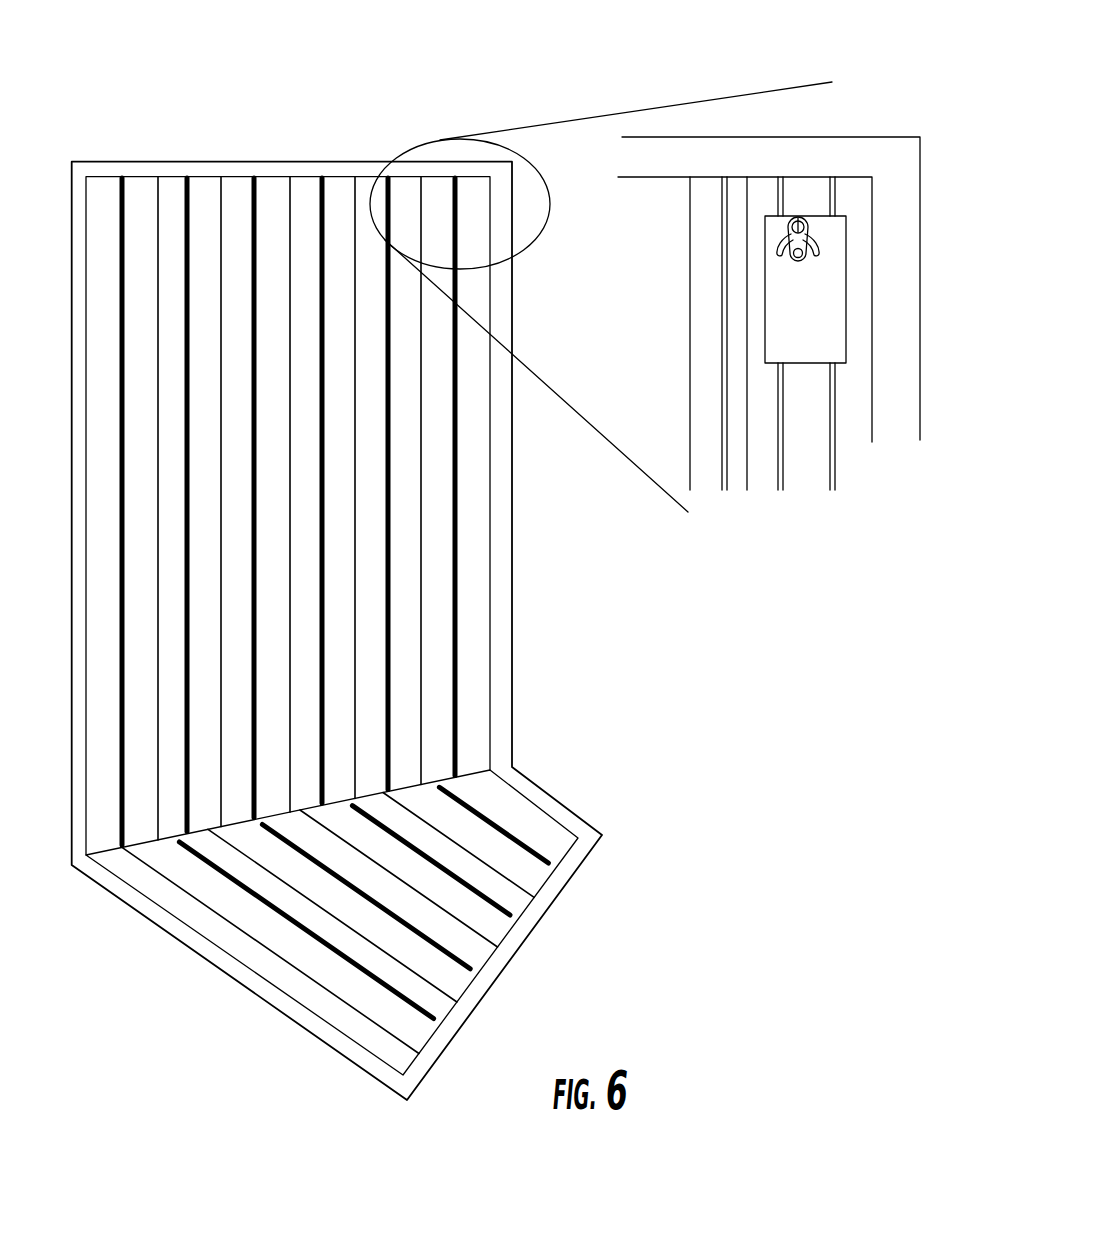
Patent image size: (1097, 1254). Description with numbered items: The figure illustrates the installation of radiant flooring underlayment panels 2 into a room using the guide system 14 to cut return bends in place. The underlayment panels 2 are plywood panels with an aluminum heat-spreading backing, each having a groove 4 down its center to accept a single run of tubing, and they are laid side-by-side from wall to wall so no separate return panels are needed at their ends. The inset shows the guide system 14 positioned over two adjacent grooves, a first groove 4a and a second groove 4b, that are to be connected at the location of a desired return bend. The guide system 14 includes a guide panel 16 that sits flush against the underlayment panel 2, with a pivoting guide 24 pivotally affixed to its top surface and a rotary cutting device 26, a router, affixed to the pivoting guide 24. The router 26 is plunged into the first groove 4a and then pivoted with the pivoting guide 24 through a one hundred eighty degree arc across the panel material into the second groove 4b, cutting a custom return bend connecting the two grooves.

The underlayment panel 2 is at (478, 542).
The groove 4 is at (455, 508).
The first groove 4a is at (832, 457).
The second groove 4b is at (785, 463).
The guide system 14 is at (859, 229).
The guide panel 16 is at (815, 343).
The pivoting guide 24 is at (794, 242).
The rotary cutting device 26 is at (798, 220).